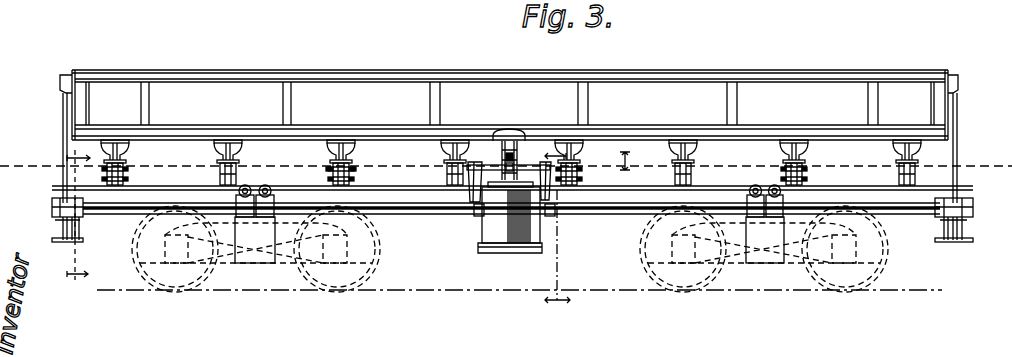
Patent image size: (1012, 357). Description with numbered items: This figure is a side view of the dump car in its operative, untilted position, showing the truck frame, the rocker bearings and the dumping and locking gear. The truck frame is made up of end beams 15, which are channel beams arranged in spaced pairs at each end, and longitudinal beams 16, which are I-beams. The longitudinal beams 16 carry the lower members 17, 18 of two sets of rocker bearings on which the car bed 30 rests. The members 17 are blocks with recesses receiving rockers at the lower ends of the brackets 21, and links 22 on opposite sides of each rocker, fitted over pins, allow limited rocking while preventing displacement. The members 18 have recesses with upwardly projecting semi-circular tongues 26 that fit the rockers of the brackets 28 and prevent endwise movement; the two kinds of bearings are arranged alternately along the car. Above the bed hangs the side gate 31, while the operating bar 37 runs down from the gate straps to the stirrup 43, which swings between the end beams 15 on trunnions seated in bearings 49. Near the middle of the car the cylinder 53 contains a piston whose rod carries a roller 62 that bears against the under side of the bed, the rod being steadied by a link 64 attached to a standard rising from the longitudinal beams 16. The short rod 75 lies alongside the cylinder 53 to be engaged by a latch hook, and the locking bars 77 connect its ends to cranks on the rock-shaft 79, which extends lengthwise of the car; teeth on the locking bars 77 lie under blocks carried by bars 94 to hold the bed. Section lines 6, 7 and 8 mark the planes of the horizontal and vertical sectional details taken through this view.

The car bed 30 is at (72, 77).
The side gate 31 is at (856, 82).
The operating bar 37 is at (63, 140).
The bracket 21 is at (125, 140).
The bracket 28 is at (237, 140).
The tongue 26 is at (690, 140).
The lower member of rocker-bearing 17 is at (128, 170).
The lower member of rocker-bearing 18 is at (237, 172).
The link 22 is at (328, 176).
The link 64 is at (500, 132).
The roller 62 is at (516, 152).
The short rod 75 is at (495, 165).
The locking bar 77 is at (468, 190).
The cylinder 53 is at (500, 200).
The bar 94 is at (482, 214).
The longitudinal beam 16 is at (138, 200).
The rock-shaft 79 is at (420, 208).
The bearing 49 is at (60, 200).
The end beam 15 is at (62, 228).
The stirrup 43 is at (66, 242).
The section line 8— 8 is at (78, 216).
The section line 7— 7 is at (553, 235).
The section line 6— 6 is at (629, 161).